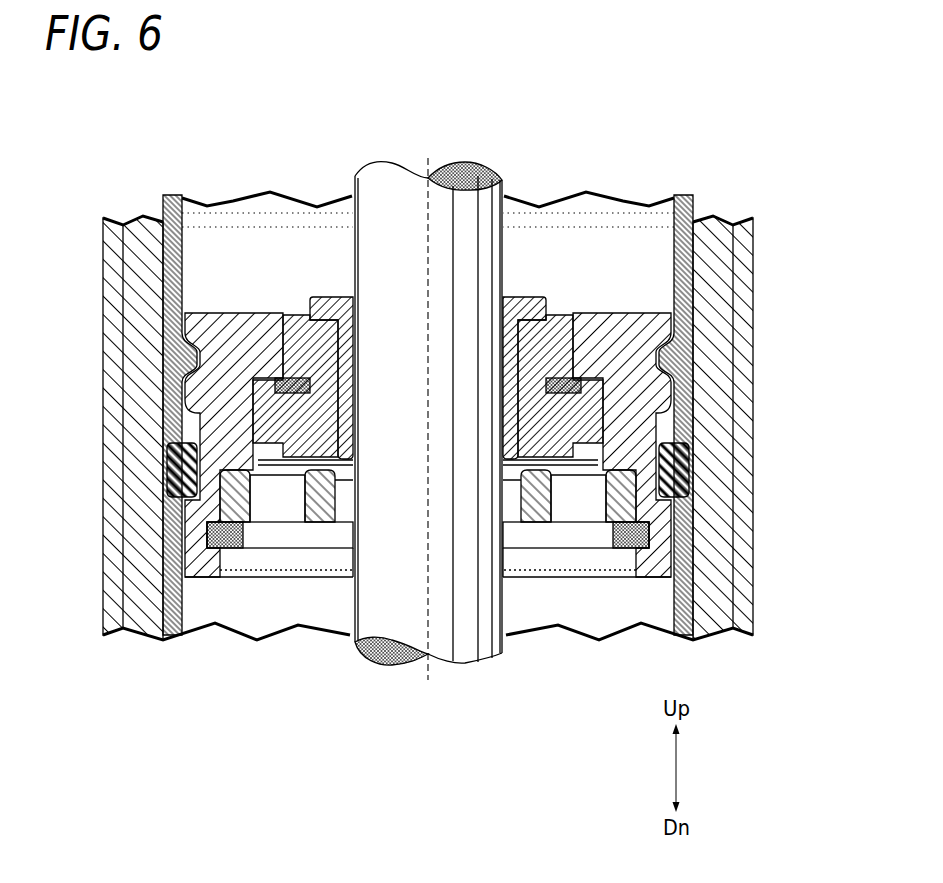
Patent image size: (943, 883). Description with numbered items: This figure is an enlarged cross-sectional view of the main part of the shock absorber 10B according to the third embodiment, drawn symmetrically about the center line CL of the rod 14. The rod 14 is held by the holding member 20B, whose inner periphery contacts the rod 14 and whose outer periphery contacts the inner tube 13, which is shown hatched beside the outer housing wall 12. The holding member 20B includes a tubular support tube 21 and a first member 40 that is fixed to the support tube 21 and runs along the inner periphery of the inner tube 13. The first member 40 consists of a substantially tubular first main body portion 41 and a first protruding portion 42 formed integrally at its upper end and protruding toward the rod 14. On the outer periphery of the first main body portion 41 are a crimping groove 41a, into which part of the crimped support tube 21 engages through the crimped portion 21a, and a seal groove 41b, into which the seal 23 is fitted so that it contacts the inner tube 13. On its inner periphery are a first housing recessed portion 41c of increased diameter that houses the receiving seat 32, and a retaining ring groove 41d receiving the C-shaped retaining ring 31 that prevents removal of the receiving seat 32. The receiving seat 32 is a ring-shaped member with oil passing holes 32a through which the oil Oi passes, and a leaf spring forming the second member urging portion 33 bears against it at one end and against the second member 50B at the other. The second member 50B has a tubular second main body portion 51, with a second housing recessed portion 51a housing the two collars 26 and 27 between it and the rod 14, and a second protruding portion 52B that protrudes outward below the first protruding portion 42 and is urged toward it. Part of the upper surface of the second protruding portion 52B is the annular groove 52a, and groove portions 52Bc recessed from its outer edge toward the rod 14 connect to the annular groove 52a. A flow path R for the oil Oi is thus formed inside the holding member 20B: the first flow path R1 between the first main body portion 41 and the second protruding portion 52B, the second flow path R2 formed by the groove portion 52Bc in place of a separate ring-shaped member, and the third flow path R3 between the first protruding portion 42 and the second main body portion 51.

The shock absorber 10B is at (134, 139).
The housing 12 is at (107, 225).
The inner tube 13 is at (144, 225).
The rod 14 is at (470, 172).
The holding member 20B is at (266, 232).
The support tube 21 is at (177, 195).
The crimped portion 21a is at (170, 361).
The seal 23 is at (166, 477).
The collar 26 is at (358, 396).
The collar 27 is at (358, 367).
The retaining ring 31 is at (233, 553).
The receiving seat 32 is at (220, 521).
The oil passing hole 32a is at (263, 512).
The second member urging portion 33 is at (428, 496).
The first member 40 is at (262, 262).
The first main body portion 41 is at (227, 312).
The crimping groove 41a is at (648, 316).
The seal groove 41b is at (668, 438).
The first housing recessed portion 41c is at (622, 469).
The retaining ring groove 41d is at (623, 555).
The first protruding portion 42 is at (272, 312).
The second member 50B is at (345, 262).
The second main body portion 51 is at (330, 297).
The second housing recessed portion 51a is at (358, 335).
The second protruding portion 52B is at (277, 320).
The groove portion 52Bc is at (252, 388).
The annular groove 52a is at (297, 394).
The center line CL is at (424, 158).
The oil Oi is at (587, 208).
The flow path R is at (642, 260).
The first flow path R1 is at (623, 315).
The second flow path R2 is at (593, 315).
The third flow path R3 is at (560, 315).